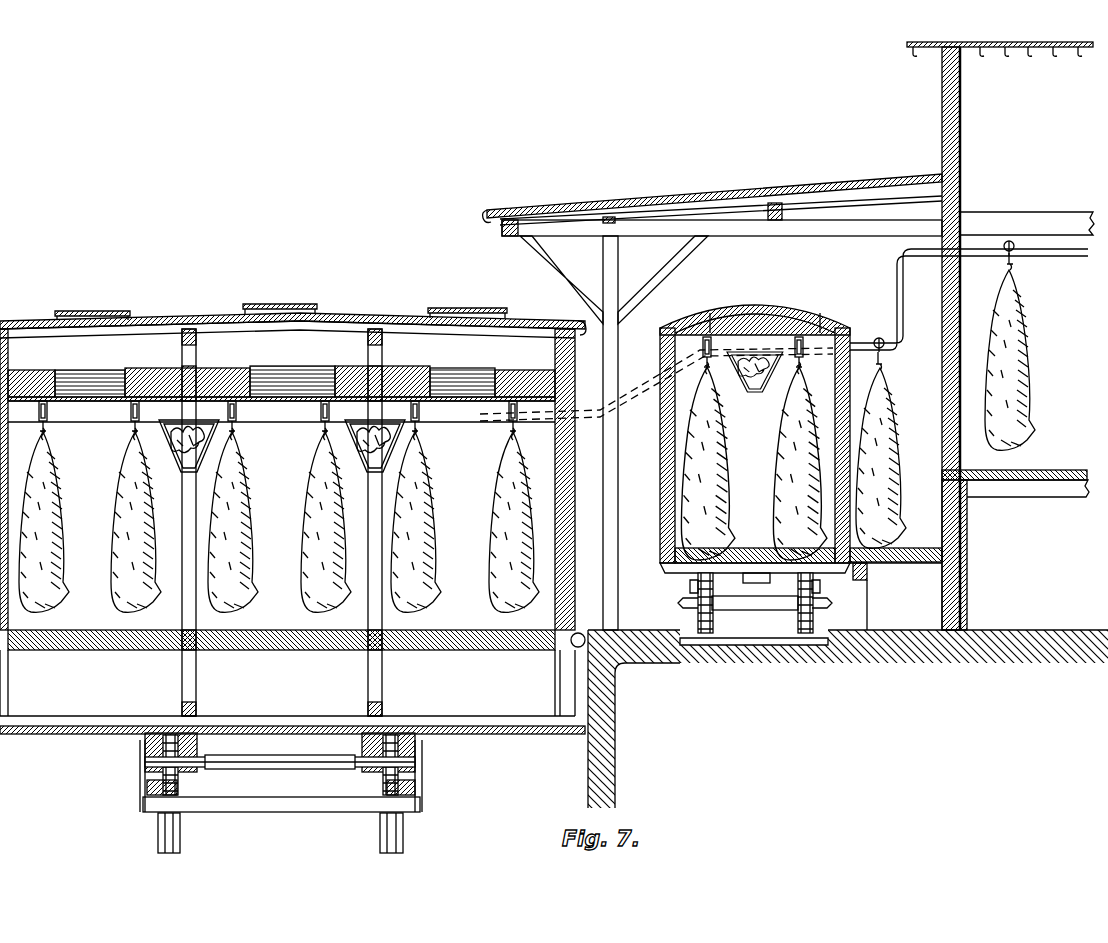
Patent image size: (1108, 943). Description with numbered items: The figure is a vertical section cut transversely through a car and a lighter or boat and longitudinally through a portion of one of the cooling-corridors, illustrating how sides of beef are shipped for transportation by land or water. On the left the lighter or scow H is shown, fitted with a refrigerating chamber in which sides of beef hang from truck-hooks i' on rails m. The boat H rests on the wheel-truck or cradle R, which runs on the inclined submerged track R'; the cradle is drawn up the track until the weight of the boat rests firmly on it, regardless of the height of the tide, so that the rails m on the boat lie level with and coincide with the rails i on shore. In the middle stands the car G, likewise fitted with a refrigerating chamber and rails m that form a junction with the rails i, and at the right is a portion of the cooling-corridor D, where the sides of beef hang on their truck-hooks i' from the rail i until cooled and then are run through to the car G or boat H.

The lighter or scow H is at (279, 522).
The rails m is at (433, 389).
The truck-hooks i' is at (522, 347).
The rails i is at (784, 331).
The car G is at (755, 469).
The cooling-corridor D is at (1015, 450).
The wheel-truck or cradle R is at (278, 764).
The inclined submerged track R' is at (282, 796).